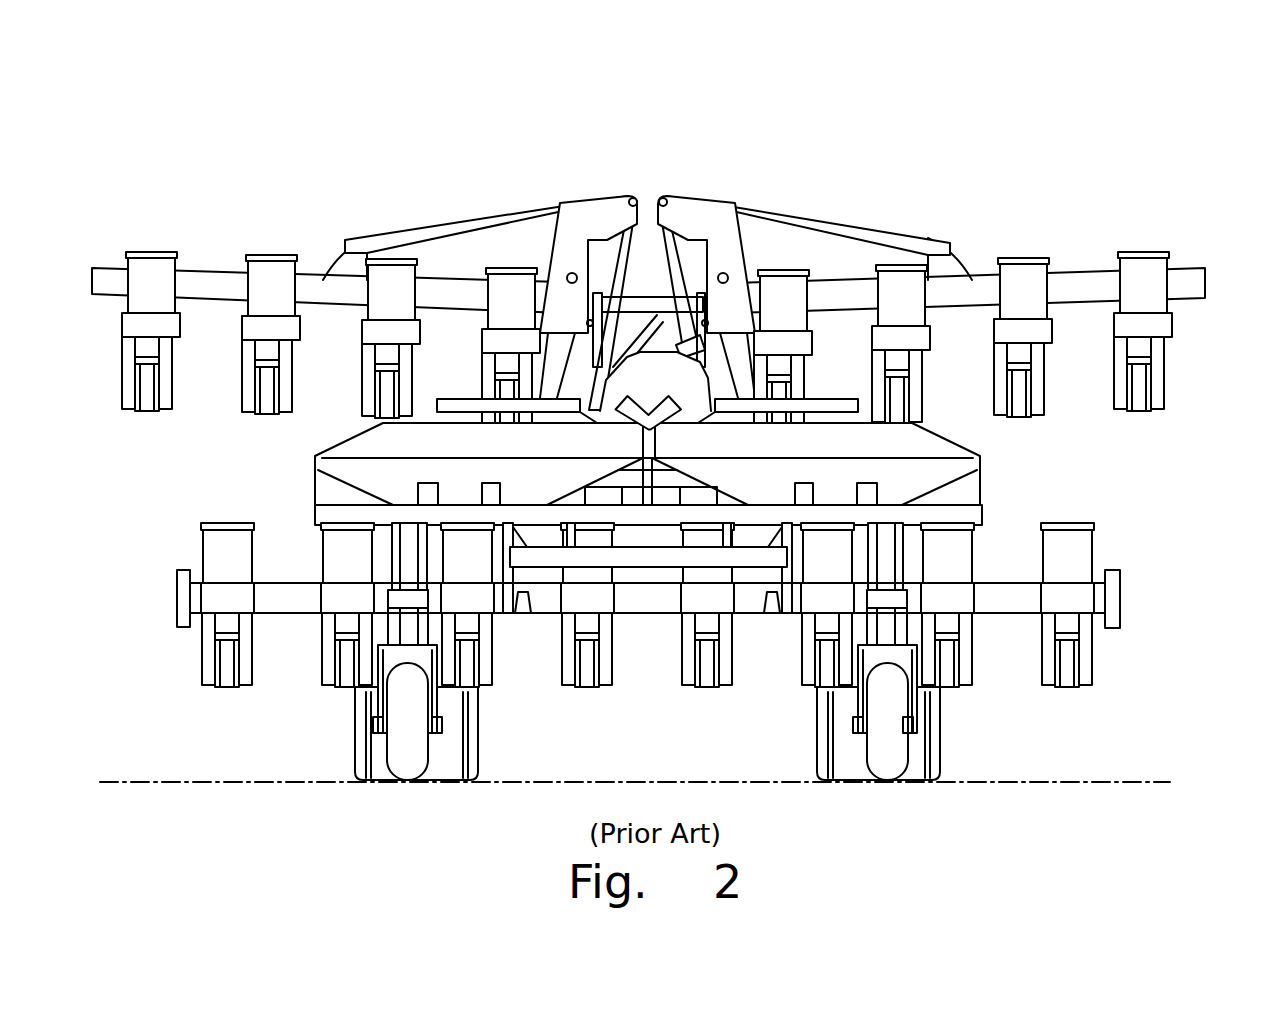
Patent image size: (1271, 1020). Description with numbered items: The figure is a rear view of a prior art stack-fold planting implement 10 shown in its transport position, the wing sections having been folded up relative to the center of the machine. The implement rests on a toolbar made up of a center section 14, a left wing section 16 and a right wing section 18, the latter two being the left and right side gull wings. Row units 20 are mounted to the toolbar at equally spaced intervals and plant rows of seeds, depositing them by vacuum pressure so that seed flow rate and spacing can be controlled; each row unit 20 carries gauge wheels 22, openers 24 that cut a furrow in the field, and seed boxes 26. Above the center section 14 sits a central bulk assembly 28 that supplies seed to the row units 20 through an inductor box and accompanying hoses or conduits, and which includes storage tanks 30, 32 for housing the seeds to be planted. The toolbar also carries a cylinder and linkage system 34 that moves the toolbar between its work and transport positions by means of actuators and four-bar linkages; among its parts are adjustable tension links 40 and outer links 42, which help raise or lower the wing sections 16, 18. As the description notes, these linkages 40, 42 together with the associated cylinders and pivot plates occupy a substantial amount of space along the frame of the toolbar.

The planting implement 10 is at (658, 419).
The center section 14 is at (1113, 593).
The left wing section 16 is at (1087, 287).
The right wing section 18 is at (221, 284).
The row unit 20 is at (274, 250).
The gauge wheel 22 is at (1153, 400).
The opener 24 is at (145, 400).
The seed box 26 is at (153, 273).
The central bulk assembly 28 is at (820, 389).
The storage tank 30 is at (960, 475).
The storage tank 32 is at (345, 468).
The cylinder and linkage system 34 is at (647, 259).
The adjustable tension link 40 is at (617, 258).
The outer link 42 is at (446, 226).